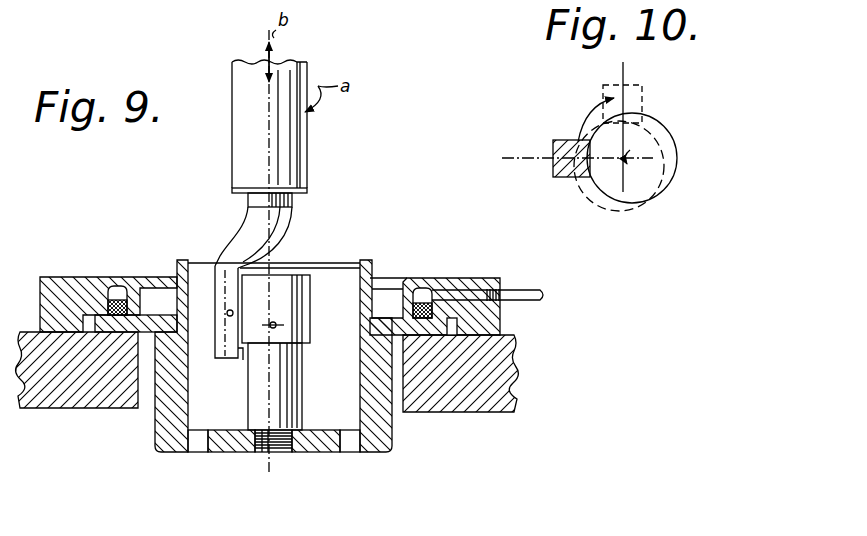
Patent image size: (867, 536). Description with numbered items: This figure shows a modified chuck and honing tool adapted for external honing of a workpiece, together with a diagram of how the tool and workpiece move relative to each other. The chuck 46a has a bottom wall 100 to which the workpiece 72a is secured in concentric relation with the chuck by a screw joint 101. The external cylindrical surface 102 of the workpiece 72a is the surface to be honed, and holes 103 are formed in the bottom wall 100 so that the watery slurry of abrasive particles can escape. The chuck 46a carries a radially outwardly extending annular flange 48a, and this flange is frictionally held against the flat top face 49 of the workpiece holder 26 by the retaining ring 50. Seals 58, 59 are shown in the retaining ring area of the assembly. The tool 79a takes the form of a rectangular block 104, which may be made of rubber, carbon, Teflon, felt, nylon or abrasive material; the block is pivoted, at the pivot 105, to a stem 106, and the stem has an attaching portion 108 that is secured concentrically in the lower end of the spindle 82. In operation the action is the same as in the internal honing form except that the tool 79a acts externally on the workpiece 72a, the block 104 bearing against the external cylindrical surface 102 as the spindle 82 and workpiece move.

In FIG. 9, the workpiece holder 26 is at (515, 373).
In FIG. 9, the chuck 46a is at (158, 435).
In FIG. 9, the annular flange 48a is at (443, 327).
In FIG. 9, the flat top face 49 is at (506, 336).
In FIG. 9, the retaining ring 50 is at (58, 277).
In FIG. 9, the seal 58 is at (426, 286).
In FIG. 9, the seal 59 is at (112, 285).
In FIG. 9, the workpiece 72a is at (304, 298).
In FIG. 9, the tool 79a is at (213, 368).
In FIG. 9, the spindle 82 is at (315, 158).
In FIG. 9, the bottom wall 100 is at (233, 453).
In FIG. 9, the screw joint 101 is at (294, 455).
In FIG. 9, the external cylindrical surface 102 is at (296, 333).
In FIG. 10, the external cylindrical surface 102 is at (678, 147).
In FIG. 9, the holes 103 is at (196, 454).
In FIG. 9, the rectangular block 104 is at (238, 362).
In FIG. 10, the rectangular block 104 is at (560, 141).
In FIG. 9, the pivot 105 is at (228, 311).
In FIG. 9, the stem 106 is at (238, 238).
In FIG. 9, the attaching portion 108 is at (295, 205).